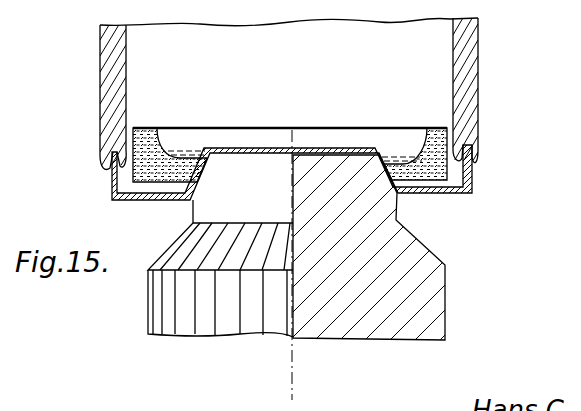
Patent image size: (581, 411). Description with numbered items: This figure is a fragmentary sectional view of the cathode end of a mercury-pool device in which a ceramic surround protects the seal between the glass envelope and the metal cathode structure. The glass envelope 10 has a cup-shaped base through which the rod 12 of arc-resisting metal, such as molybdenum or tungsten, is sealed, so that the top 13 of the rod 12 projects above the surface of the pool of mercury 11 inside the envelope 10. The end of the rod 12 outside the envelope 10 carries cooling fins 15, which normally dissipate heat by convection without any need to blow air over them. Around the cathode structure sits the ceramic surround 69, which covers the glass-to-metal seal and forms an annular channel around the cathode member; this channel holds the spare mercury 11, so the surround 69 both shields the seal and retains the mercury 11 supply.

The envelope 10 is at (477, 68).
The mercury 11 is at (401, 148).
The rod 12 is at (193, 212).
The top of the rod 13 is at (256, 147).
The cooling fins 15 is at (447, 300).
The ceramic surround 69 is at (434, 127).